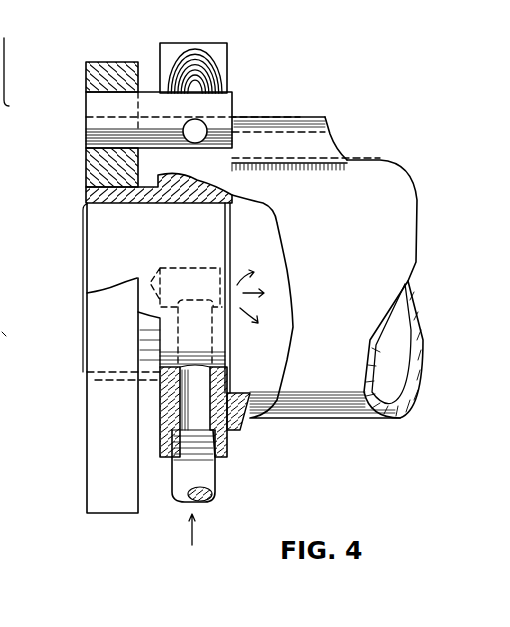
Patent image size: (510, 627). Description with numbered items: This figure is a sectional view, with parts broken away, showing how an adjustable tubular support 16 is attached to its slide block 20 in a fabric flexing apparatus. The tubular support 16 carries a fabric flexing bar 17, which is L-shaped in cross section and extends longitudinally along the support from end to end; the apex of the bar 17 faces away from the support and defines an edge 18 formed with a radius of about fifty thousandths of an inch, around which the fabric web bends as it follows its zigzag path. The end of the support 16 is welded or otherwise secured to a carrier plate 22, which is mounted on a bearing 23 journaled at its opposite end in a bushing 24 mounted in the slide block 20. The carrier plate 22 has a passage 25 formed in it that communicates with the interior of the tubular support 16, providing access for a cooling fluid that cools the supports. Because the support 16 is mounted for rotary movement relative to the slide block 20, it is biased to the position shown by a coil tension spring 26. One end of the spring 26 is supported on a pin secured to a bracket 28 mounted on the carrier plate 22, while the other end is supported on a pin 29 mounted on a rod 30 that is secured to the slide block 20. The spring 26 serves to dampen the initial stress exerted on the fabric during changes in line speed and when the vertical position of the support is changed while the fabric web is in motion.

The adjustable tubular support 16 is at (345, 398).
The fabric flexing bar 17 is at (328, 140).
The edge 18 is at (298, 116).
The slide block 20 is at (110, 62).
The carrier plate 22 is at (223, 457).
The bearing 23 is at (98, 249).
The bushing 24 is at (88, 194).
The passage 25 is at (207, 400).
The coil tension spring 26 is at (217, 66).
The bracket 28 is at (204, 43).
The pin 29 is at (197, 127).
The rod 30 is at (101, 116).